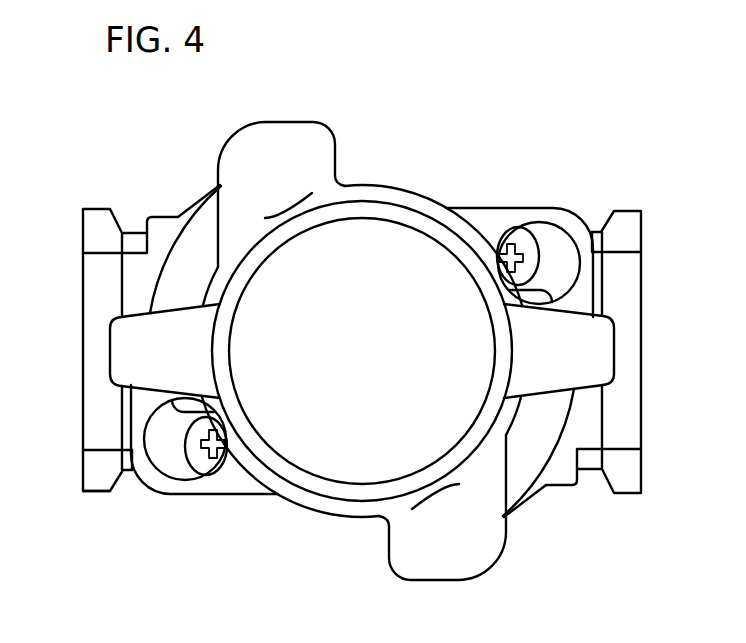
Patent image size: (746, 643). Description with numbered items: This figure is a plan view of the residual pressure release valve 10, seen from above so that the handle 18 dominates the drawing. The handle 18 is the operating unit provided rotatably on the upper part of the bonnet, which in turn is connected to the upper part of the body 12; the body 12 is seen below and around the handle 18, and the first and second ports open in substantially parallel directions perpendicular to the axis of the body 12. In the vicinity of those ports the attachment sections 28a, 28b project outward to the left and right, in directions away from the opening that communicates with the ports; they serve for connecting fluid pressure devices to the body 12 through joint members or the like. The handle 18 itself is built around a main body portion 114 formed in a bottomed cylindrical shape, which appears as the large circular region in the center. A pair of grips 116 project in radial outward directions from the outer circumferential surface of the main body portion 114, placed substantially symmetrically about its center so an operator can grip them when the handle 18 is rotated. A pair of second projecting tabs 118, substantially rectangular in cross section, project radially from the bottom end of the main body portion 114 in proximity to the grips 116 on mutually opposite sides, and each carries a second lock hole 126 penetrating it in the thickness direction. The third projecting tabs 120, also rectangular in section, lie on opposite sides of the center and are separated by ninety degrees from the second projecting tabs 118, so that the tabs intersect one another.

The residual pressure release valve 10 is at (494, 96).
The body 12 is at (106, 503).
The handle 18 is at (446, 195).
The main body portion 114 is at (395, 243).
The grips 116 is at (133, 357).
The second projecting tabs 118 is at (552, 217).
The third projecting tabs 120 is at (287, 137).
The second lock holes 126 is at (557, 252).
The attachment section 28a is at (90, 407).
The attachment section 28b is at (630, 416).